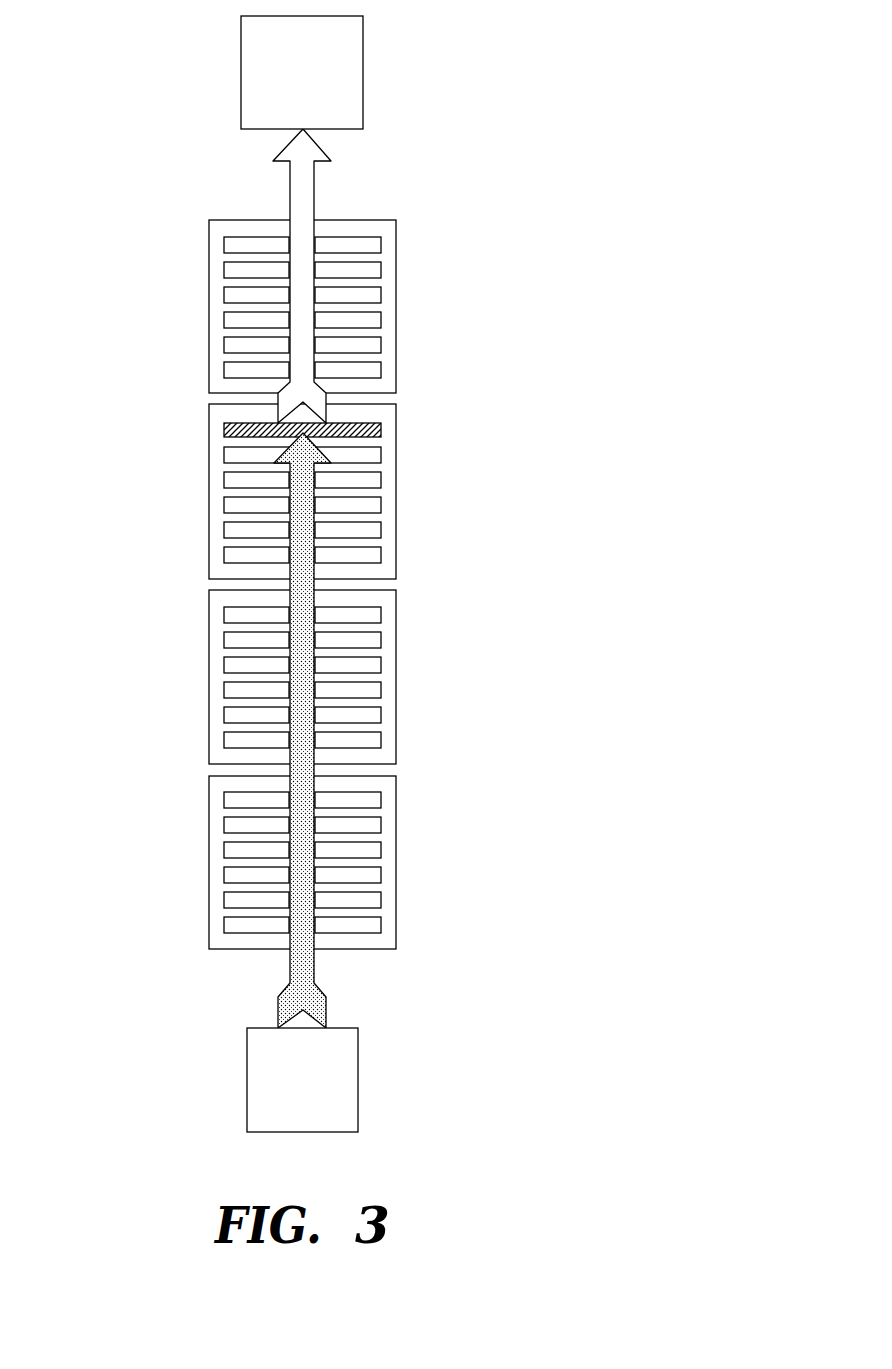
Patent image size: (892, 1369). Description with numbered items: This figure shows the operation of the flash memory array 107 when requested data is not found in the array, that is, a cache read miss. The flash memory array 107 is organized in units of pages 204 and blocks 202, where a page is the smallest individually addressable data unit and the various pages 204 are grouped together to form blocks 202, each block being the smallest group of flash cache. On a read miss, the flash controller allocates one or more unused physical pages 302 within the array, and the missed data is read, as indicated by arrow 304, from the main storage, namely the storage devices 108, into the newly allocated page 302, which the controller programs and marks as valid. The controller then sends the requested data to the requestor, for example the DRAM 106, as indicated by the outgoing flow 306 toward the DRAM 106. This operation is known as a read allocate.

The DRAM 106 is at (328, 85).
The flash memory array 107 is at (580, 570).
The storage devices 108 is at (328, 1096).
The block 202 is at (388, 307).
The page 204 is at (230, 321).
The unused physical page 302 is at (372, 431).
The arrow 304 is at (304, 971).
The output flow 306 is at (308, 195).